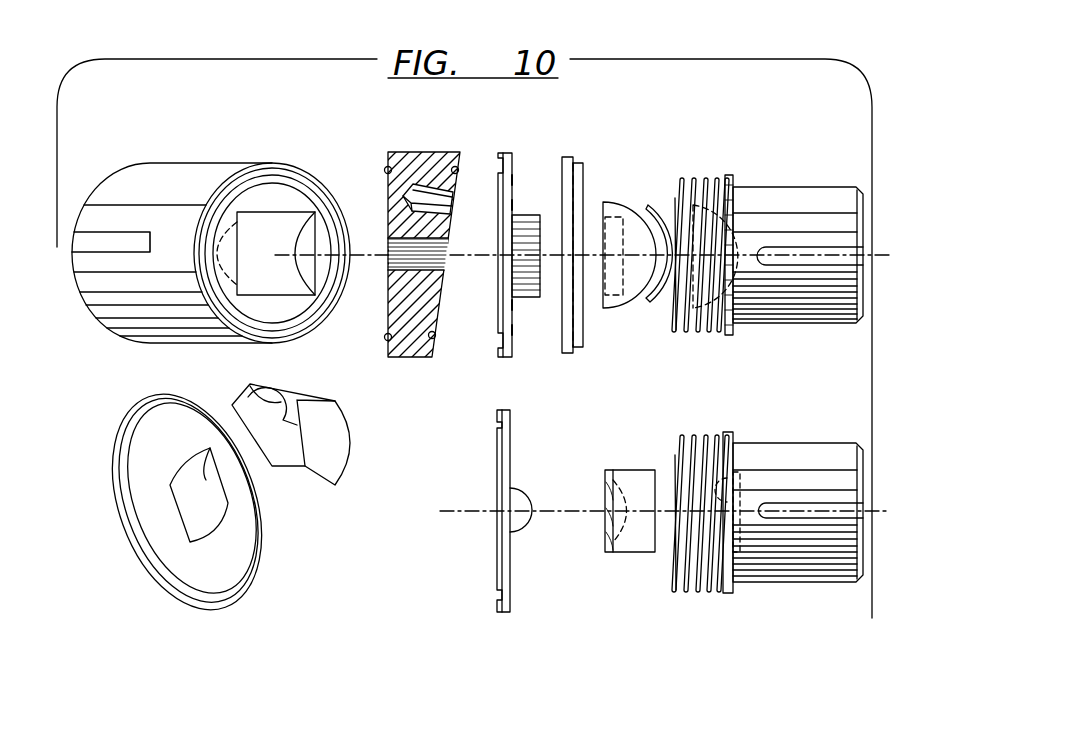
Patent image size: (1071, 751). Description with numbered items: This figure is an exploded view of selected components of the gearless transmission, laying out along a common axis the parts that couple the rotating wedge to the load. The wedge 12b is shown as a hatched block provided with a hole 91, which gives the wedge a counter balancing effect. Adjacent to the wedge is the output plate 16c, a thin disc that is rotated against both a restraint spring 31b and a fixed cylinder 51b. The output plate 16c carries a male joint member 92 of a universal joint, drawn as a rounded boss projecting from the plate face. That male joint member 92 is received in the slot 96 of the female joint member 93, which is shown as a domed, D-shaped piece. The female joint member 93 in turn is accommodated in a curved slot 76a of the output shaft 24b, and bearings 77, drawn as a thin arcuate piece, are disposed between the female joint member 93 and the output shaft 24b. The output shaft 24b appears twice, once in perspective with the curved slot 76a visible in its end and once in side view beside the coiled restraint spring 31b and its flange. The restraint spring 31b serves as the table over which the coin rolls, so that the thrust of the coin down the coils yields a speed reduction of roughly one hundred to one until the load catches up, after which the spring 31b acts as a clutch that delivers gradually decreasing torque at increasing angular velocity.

The output shaft 24b is at (150, 188).
The curved slot 76a is at (262, 238).
The housing block 12b is at (425, 160).
The hole 91 is at (453, 207).
The output plate 16c is at (518, 178).
The male joint member 92 is at (527, 217).
The female joint member 93 is at (614, 200).
The bearings 77 is at (652, 303).
The fixed cylinder 51b is at (578, 345).
The restraint spring 31b is at (703, 182).
The slot 96 is at (284, 472).